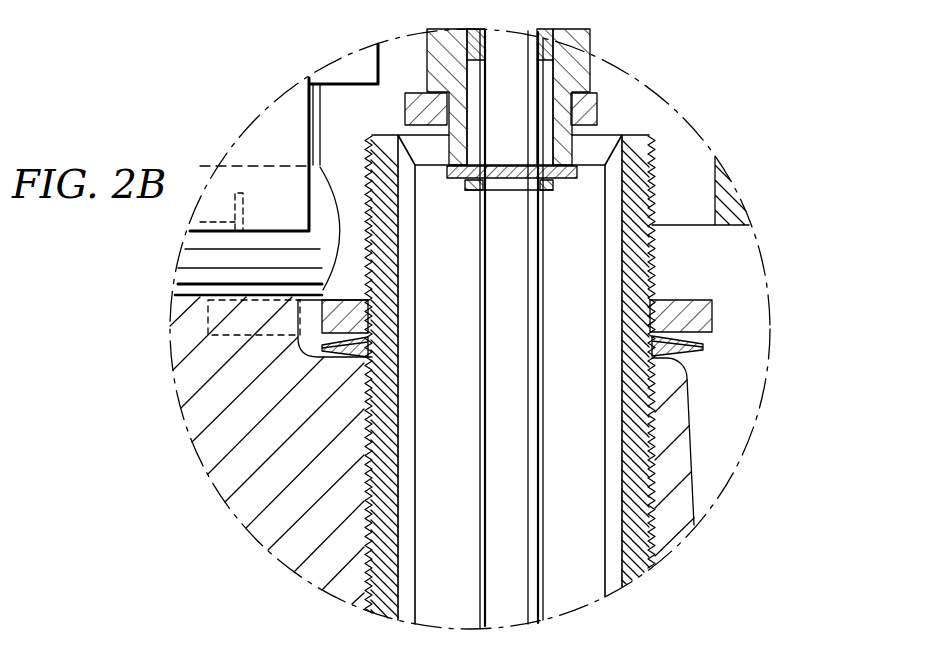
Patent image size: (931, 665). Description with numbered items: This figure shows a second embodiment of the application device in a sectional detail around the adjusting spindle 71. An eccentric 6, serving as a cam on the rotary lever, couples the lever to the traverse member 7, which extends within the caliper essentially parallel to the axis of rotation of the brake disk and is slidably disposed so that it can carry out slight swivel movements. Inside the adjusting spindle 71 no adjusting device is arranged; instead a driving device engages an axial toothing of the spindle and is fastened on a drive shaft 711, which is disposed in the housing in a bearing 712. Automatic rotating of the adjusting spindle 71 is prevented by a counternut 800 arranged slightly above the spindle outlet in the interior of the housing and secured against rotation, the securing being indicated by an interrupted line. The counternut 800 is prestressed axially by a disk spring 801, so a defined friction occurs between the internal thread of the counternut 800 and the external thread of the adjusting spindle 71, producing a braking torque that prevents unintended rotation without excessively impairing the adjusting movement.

The eccentric 6 is at (202, 273).
The traverse member 7 is at (302, 552).
The adjusting spindle 71 is at (645, 287).
The drive shaft 711 is at (527, 603).
The bearing 712 is at (590, 60).
The counternut 800 is at (713, 313).
The disk spring 801 is at (703, 347).